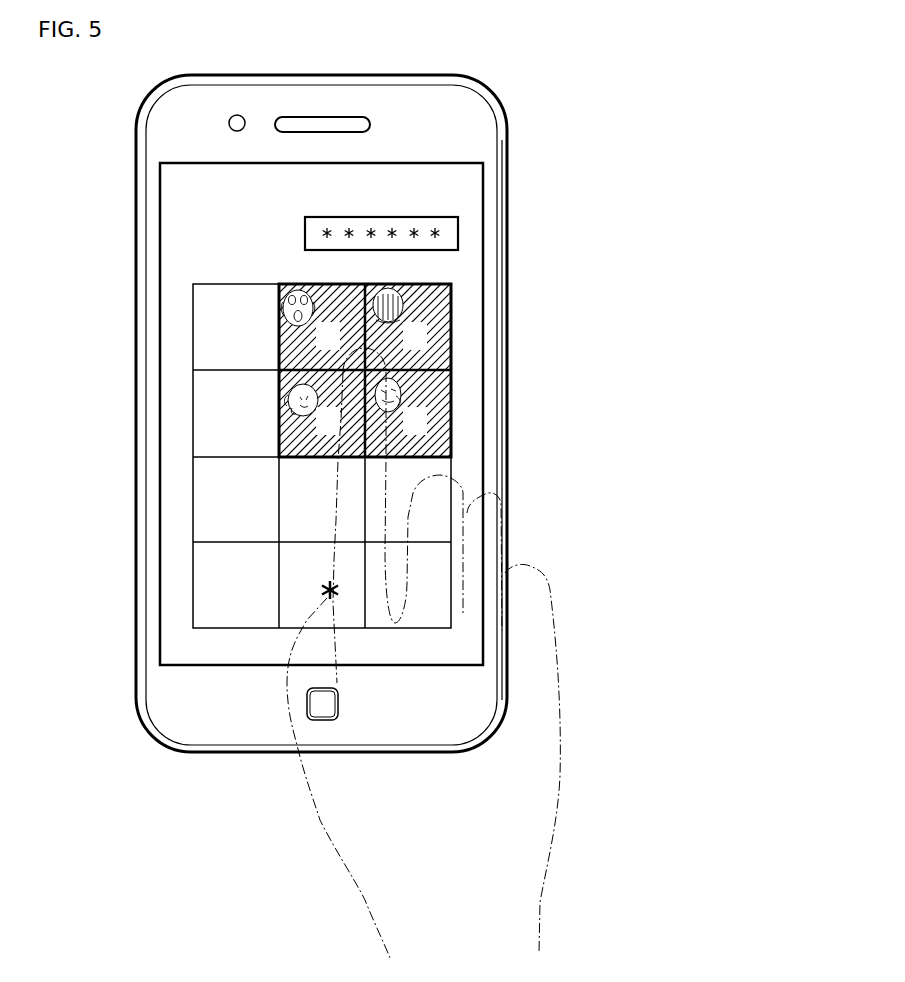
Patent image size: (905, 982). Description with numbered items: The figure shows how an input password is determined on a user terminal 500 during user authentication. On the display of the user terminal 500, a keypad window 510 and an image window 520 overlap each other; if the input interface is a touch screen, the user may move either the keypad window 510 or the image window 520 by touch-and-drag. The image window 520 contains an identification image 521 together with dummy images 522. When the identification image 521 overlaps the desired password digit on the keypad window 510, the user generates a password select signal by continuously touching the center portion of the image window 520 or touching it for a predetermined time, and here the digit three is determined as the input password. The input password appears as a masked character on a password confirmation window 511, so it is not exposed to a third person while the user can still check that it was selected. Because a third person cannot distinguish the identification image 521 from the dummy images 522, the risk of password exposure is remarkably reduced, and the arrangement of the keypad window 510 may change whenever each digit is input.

The user terminal 500 is at (508, 133).
The password confirmation window 511 is at (458, 233).
The image window 520 is at (452, 353).
The identification image 521 is at (278, 312).
The dummy images 522 is at (400, 302).
The keypad window 510 is at (434, 484).